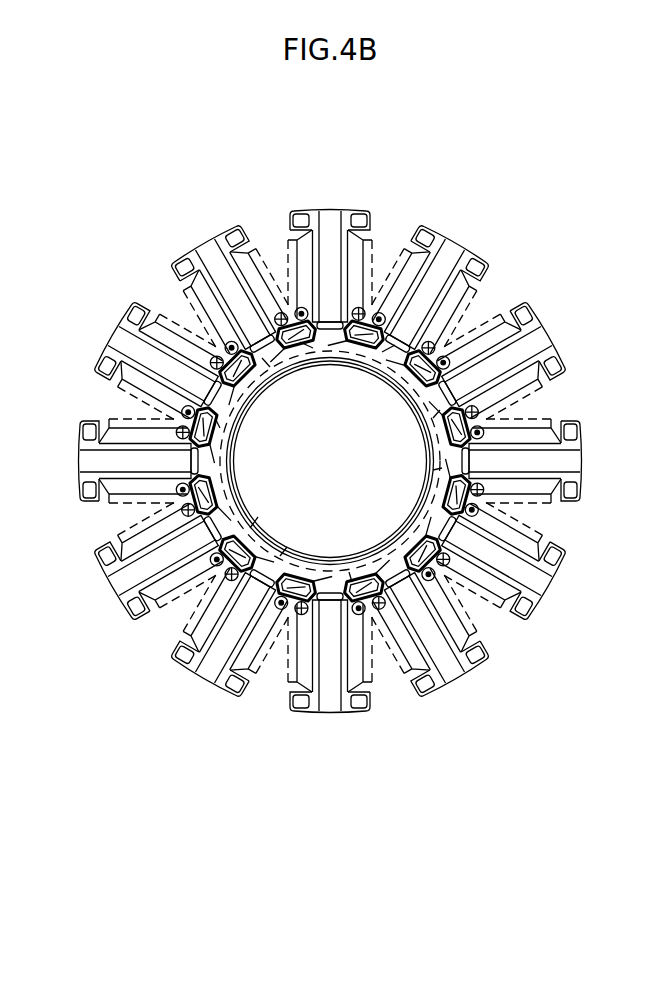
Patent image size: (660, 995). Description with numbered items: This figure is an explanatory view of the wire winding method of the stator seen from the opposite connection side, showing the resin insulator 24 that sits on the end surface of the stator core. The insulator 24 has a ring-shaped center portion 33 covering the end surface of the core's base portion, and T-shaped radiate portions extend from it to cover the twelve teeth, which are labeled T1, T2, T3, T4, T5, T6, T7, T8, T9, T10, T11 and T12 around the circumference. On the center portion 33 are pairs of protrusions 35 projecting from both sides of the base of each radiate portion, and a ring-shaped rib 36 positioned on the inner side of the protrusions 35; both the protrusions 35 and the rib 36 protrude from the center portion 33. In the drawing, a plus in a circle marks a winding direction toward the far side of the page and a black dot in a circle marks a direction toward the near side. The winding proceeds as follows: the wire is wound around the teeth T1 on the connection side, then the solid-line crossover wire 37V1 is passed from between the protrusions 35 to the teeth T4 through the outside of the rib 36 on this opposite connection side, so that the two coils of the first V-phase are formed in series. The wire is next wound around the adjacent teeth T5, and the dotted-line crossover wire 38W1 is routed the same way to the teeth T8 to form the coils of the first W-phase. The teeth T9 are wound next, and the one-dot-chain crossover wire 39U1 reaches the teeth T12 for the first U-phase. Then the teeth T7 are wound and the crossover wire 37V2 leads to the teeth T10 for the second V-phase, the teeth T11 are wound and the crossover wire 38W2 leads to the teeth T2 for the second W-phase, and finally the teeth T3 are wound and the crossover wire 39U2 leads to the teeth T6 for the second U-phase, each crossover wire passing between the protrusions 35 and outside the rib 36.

The insulator 24 is at (484, 256).
The teeth T1 is at (330, 671).
The teeth T2 is at (234, 636).
The teeth T3 is at (154, 557).
The teeth T4 is at (119, 461).
The teeth T5 is at (154, 365).
The teeth T6 is at (234, 287).
The teeth T7 is at (330, 250).
The teeth T8 is at (426, 287).
The teeth T9 is at (508, 365).
The teeth T10 is at (551, 461).
The teeth T11 is at (513, 557).
The teeth T12 is at (427, 636).
The center portion 33 is at (382, 352).
The protrusions 35 is at (313, 348).
The rib 36 is at (287, 547).
The crossover wire 37V1 is at (258, 517).
The crossover wire 37V2 is at (433, 418).
The crossover wire 38W1 is at (270, 367).
The crossover wire 38W2 is at (349, 572).
The crossover wire 39U1 is at (433, 470).
The crossover wire 39U2 is at (220, 428).